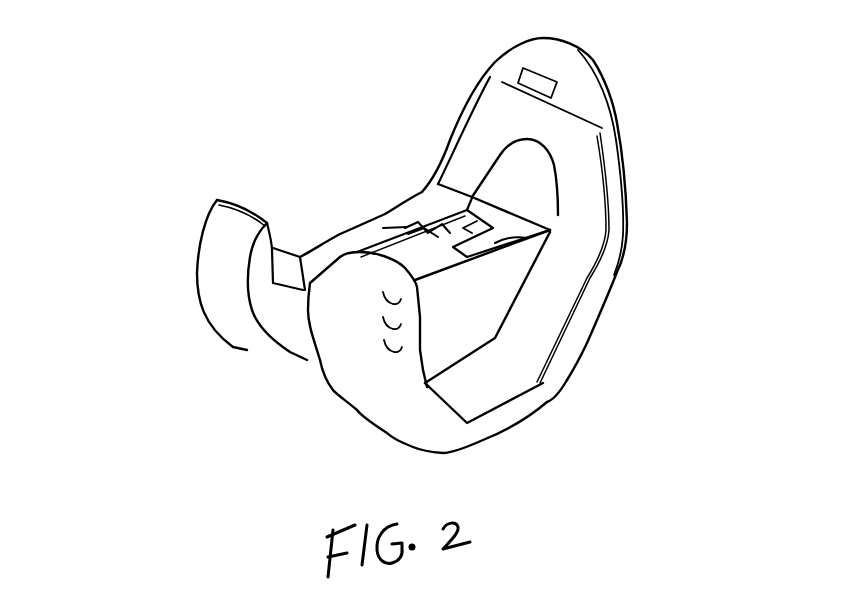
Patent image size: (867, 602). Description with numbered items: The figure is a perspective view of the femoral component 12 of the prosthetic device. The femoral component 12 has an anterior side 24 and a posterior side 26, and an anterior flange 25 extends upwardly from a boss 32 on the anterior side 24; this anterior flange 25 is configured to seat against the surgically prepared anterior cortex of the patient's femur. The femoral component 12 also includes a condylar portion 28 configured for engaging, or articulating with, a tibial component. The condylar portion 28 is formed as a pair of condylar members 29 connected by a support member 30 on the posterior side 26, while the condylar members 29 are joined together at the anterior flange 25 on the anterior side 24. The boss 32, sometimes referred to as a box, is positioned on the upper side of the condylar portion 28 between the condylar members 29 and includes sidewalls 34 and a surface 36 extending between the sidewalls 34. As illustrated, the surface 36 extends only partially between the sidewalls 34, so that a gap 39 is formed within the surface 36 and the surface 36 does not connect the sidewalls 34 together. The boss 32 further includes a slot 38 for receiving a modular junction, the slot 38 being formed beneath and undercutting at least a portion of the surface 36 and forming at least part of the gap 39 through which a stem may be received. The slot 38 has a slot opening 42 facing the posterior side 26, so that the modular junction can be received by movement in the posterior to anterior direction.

The femoral component 12 is at (668, 68).
The anterior side 24 is at (623, 147).
The anterior flange 25 is at (490, 102).
The posterior side 26 is at (270, 437).
The condylar portion 28 is at (510, 483).
The condylar members 29 is at (200, 291).
The support member 30 is at (323, 363).
The boss 32 is at (600, 463).
The sidewalls 34 is at (635, 366).
The surface 36 is at (647, 300).
The slot 38 is at (460, 217).
The gap 39 is at (670, 232).
The slot opening 42 is at (385, 216).